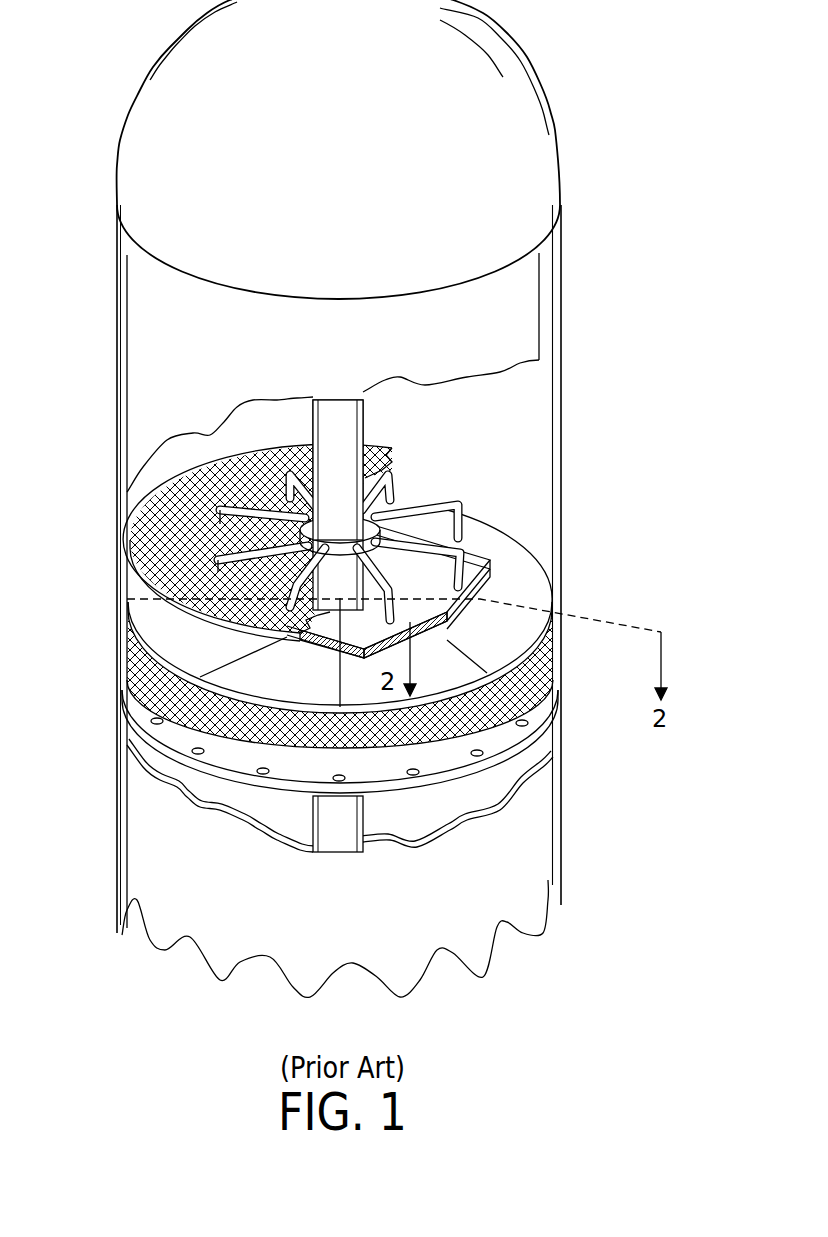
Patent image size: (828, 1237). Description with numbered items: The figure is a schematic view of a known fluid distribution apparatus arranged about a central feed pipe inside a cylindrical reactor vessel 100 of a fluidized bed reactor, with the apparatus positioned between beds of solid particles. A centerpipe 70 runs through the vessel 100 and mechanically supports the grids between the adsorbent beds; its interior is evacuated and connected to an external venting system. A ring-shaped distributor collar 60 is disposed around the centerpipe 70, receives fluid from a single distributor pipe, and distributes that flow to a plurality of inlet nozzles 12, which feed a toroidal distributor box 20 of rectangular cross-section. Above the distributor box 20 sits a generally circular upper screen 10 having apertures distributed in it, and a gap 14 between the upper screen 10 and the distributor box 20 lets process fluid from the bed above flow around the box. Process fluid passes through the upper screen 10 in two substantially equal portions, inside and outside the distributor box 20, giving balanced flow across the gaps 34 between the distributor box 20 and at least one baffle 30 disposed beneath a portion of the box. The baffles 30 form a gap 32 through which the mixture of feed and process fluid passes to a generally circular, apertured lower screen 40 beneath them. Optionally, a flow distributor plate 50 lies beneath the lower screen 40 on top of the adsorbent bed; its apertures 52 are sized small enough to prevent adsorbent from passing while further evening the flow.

The reactor vessel 100 is at (562, 266).
The centerpipe 70 is at (343, 425).
The distributor collar 60 is at (385, 495).
The distributor box 20 is at (418, 525).
The inlet nozzle 12 is at (468, 548).
The upper screen 10 is at (152, 543).
The baffle 30 is at (522, 572).
The gap 34 is at (463, 618).
The lower screen 40 is at (532, 677).
The flow distributor plate 50 is at (532, 720).
The apertures 52 is at (150, 717).
The gap 14 is at (235, 668).
The gap 32 is at (352, 652).